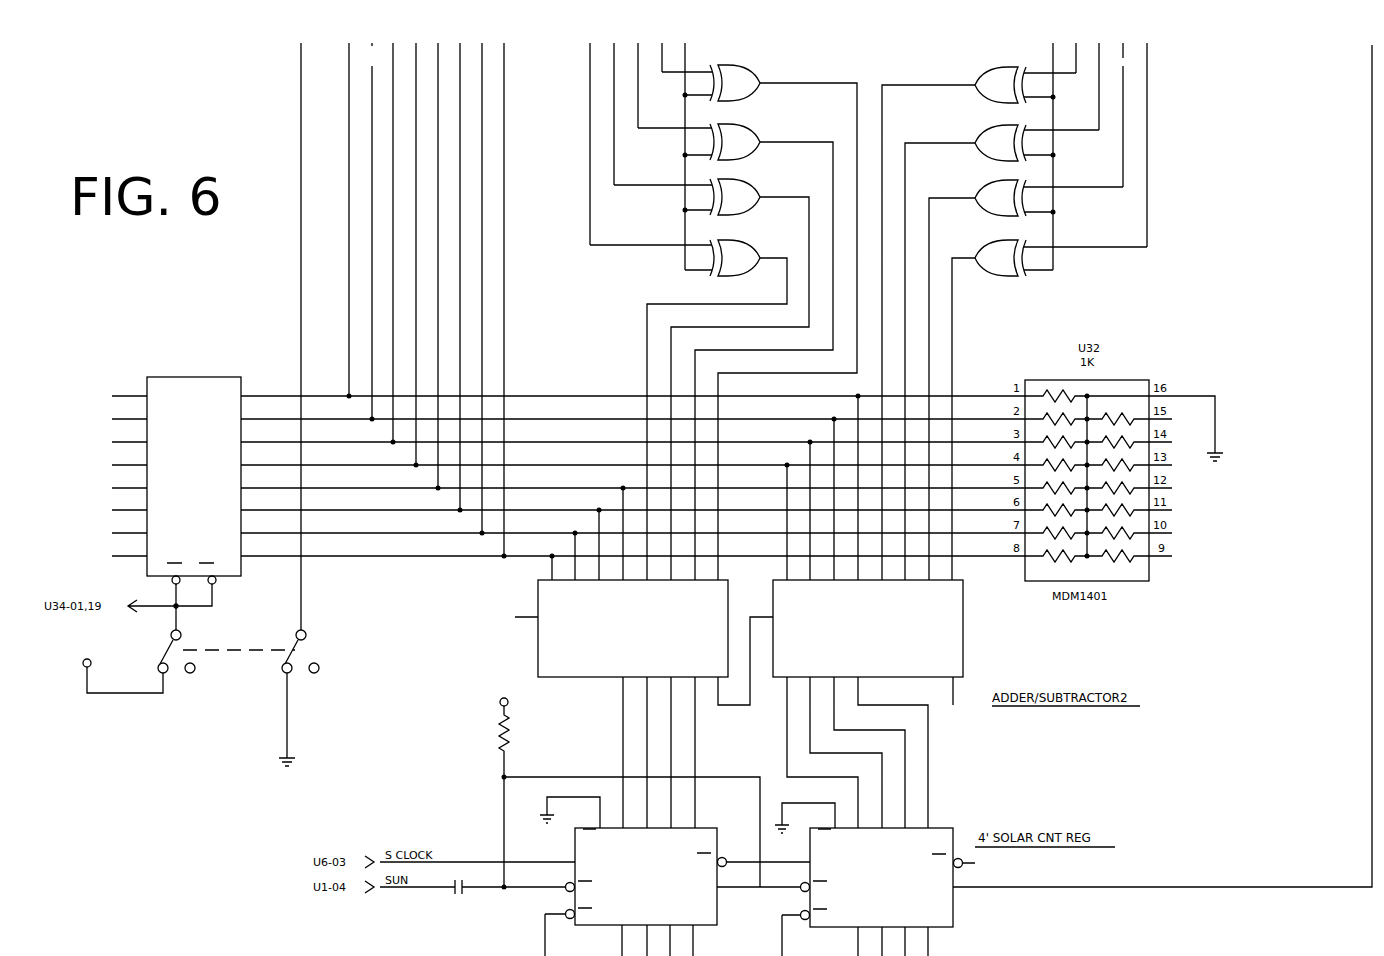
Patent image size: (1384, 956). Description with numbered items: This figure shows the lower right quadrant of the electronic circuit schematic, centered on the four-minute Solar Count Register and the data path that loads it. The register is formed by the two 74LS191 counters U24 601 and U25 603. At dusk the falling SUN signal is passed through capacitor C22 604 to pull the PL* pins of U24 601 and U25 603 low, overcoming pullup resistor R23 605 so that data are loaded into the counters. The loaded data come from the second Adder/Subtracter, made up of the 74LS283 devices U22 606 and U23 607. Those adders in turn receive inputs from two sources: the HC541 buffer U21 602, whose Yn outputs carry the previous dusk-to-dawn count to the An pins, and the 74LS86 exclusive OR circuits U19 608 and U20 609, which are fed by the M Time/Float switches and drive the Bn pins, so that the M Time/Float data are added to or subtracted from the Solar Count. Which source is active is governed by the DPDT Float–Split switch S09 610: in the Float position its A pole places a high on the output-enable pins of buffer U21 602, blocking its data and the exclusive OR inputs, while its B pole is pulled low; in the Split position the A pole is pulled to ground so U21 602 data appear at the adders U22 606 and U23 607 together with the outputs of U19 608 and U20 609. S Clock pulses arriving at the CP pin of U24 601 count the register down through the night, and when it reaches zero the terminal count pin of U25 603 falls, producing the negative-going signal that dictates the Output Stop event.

The counter U24 601 is at (602, 868).
The buffer U21 602 is at (190, 378).
The counter U25 603 is at (944, 835).
The capacitor C22 604 is at (443, 893).
The pullup resistor R23 605 is at (490, 741).
The adder U22 606 is at (557, 658).
The adder U23 607 is at (945, 645).
The exclusive OR circuit U19 608 is at (725, 250).
The exclusive OR circuit U20 609 is at (1005, 272).
The Float-Split switch S09 610 is at (218, 683).